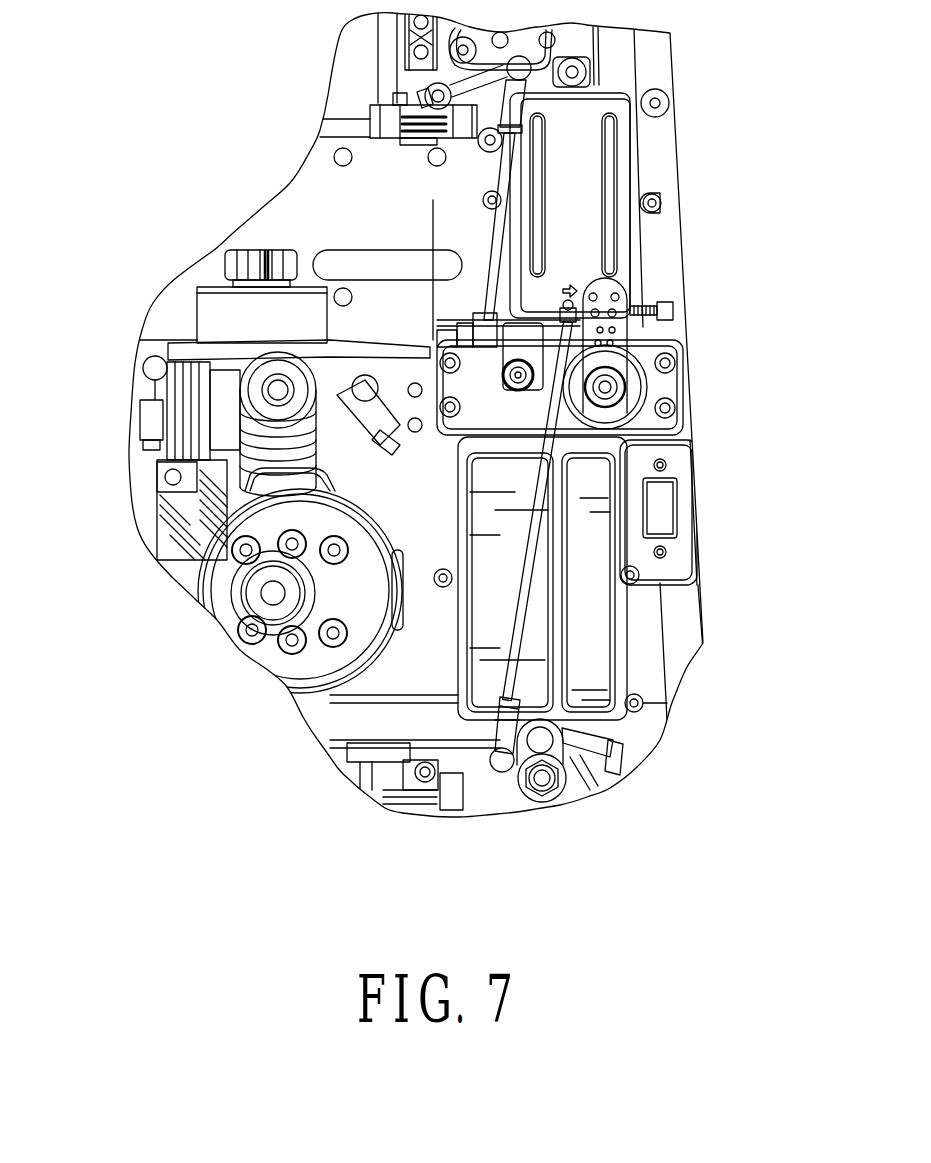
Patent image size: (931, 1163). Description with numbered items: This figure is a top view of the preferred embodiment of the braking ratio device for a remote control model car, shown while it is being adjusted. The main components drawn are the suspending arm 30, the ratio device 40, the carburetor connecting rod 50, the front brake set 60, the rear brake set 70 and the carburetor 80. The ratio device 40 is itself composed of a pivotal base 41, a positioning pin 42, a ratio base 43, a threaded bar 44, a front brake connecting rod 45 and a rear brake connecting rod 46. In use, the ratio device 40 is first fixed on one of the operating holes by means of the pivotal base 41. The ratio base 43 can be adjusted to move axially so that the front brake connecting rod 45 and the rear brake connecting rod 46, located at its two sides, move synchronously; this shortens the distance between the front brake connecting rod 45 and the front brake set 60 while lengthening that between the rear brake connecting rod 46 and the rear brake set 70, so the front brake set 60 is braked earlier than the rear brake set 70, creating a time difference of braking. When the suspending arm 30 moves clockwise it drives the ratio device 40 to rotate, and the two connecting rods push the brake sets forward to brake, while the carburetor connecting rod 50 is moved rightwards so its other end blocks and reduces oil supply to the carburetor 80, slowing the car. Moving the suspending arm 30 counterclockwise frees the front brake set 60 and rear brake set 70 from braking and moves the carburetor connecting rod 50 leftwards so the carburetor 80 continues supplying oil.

The suspending arm 30 is at (645, 372).
The ratio device 40 is at (524, 322).
The pivotal base 41 is at (200, 342).
The positioning pin 42 is at (478, 345).
The ratio base 43 is at (470, 325).
The threaded bar 44 is at (450, 338).
The front brake connecting rod 45 is at (507, 185).
The rear brake connecting rod 46 is at (530, 628).
The carburetor connecting rod 50 is at (686, 304).
The front brake set 60 is at (372, 116).
The rear brake set 70 is at (598, 792).
The carburetor 80 is at (128, 420).